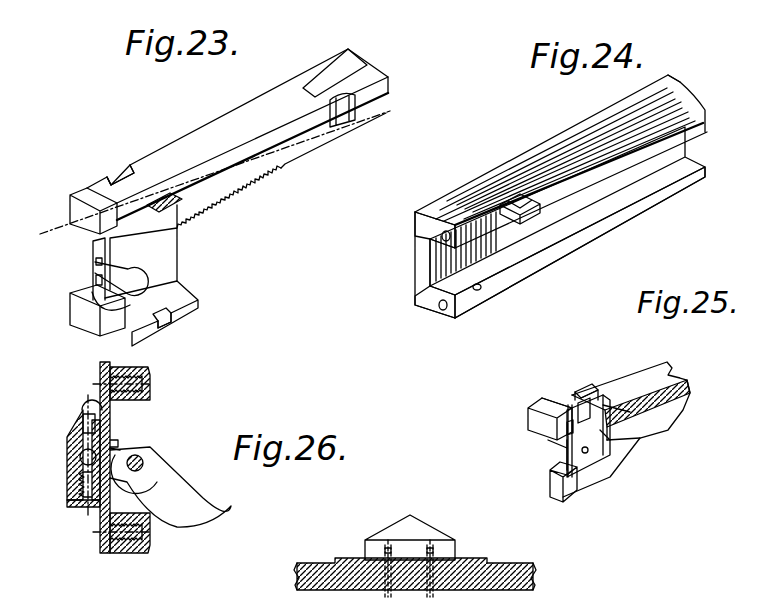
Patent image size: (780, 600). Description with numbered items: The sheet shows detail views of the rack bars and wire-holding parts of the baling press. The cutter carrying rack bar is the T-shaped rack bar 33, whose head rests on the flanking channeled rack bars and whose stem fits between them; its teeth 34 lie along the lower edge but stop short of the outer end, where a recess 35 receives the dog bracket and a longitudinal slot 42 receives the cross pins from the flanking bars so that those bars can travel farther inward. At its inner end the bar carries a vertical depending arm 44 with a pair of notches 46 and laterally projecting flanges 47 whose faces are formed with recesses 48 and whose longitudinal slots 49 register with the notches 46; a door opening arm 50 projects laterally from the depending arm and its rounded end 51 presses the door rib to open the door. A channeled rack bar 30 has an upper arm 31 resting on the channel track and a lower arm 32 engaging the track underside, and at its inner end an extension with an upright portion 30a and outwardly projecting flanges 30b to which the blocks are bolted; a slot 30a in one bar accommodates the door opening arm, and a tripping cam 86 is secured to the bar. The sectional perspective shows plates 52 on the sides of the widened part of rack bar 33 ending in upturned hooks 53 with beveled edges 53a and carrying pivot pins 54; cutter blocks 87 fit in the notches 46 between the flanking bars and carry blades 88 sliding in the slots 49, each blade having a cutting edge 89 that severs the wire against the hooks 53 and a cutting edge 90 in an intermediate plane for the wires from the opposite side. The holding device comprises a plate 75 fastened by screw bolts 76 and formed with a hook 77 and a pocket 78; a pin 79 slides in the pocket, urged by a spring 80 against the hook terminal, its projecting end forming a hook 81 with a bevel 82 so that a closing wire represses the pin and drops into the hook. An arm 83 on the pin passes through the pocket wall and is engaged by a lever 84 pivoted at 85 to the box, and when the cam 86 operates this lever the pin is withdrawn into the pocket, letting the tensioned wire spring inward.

In FIG. 24, the channeled rack bar 30 is at (480, 225).
In FIG. 26, the channeled rack bar 30 is at (300, 572).
In FIG. 24, the upright portion of rack bar extension 30a is at (420, 263).
In FIG. 24, the outwardly projecting flange 30b is at (447, 222).
In FIG. 24, the upper arm of rack bar 31 is at (683, 103).
In FIG. 24, the lower arm of rack bar 32 is at (658, 182).
In FIG. 23, the T-shaped rack bar 33 is at (231, 122).
In FIG. 25, the T-shaped rack bar 33 is at (650, 372).
In FIG. 23, the teeth of rack bar 34 is at (245, 188).
In FIG. 23, the recess 35 is at (342, 62).
In FIG. 23, the longitudinal slot 42 is at (355, 112).
In FIG. 23, the depending arm 44 is at (167, 271).
In FIG. 25, the depending arm 44 is at (607, 470).
In FIG. 23, the notch 46 is at (105, 302).
In FIG. 25, the notch 46 is at (568, 477).
In FIG. 23, the laterally projecting flange 47 is at (145, 175).
In FIG. 25, the laterally projecting flange 47 is at (598, 387).
In FIG. 23, the recess 48 is at (115, 174).
In FIG. 25, the recess 48 is at (573, 390).
In FIG. 23, the longitudinal slot 49 is at (90, 200).
In FIG. 25, the longitudinal slot 49 is at (552, 448).
In FIG. 23, the door opening arm 50 is at (137, 271).
In FIG. 23, the rounded end of door opening arm 51 is at (138, 297).
In FIG. 25, the plate 52 is at (670, 395).
In FIG. 25, the hook 53 is at (535, 409).
In FIG. 25, the beveled edge of hook 53a is at (560, 416).
In FIG. 25, the pivot pin 54 is at (575, 390).
In FIG. 26, the plate 75 is at (100, 518).
In FIG. 26, the screw bolt 76 is at (135, 383).
In FIG. 26, the hook 77 is at (84, 403).
In FIG. 26, the pocket 78 is at (77, 508).
In FIG. 26, the pin 79 is at (80, 450).
In FIG. 26, the spring 80 is at (75, 488).
In FIG. 26, the hook 81 is at (112, 452).
In FIG. 26, the bevel 82 is at (82, 425).
In FIG. 26, the laterally projecting arm 83 is at (113, 448).
In FIG. 26, the lever 84 is at (177, 500).
In FIG. 26, the pivot 85 is at (148, 463).
In FIG. 24, the tripping cam 86 is at (513, 203).
In FIG. 26, the tripping cam 86 is at (390, 533).
In FIG. 25, the block 87 is at (605, 457).
In FIG. 25, the blade 88 is at (610, 437).
In FIG. 25, the cutting edge 89 is at (627, 415).
In FIG. 25, the cutting edge 90 is at (567, 447).